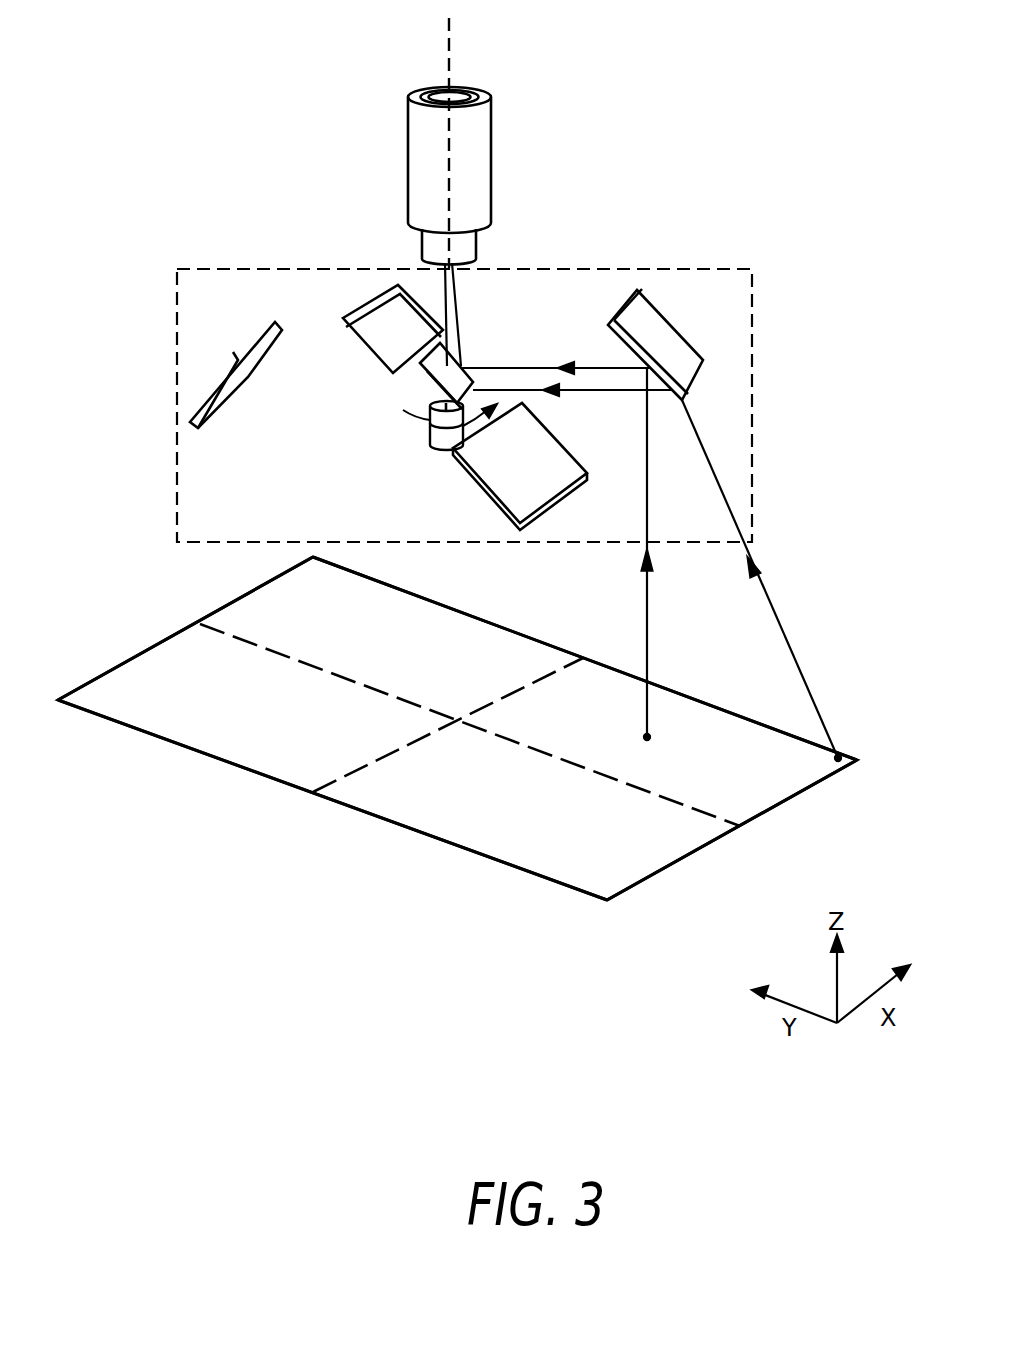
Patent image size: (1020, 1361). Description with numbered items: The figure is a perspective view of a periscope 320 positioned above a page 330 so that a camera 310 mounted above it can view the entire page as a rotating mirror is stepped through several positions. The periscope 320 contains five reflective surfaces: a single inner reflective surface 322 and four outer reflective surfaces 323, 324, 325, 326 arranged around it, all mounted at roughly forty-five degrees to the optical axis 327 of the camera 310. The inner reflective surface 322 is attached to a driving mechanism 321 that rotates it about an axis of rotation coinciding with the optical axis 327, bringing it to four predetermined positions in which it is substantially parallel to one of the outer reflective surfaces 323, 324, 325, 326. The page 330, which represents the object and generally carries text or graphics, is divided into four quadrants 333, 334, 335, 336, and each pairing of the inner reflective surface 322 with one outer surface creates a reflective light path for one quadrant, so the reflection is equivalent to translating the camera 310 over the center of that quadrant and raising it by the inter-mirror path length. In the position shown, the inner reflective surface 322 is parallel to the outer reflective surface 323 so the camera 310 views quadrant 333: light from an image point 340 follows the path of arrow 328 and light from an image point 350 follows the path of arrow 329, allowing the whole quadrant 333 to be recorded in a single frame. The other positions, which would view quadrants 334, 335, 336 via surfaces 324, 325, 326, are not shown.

The camera 310 is at (490, 157).
The periscope 320 is at (665, 268).
The driving mechanism 321 is at (430, 438).
The inner reflective surface 322 is at (462, 348).
The outer reflective surface 323 is at (643, 325).
The outer reflective surface 324 is at (512, 470).
The outer reflective surface 325 is at (248, 373).
The outer reflective surface 326 is at (380, 343).
The optical axis 327 is at (448, 62).
The arrow 328 is at (650, 612).
The arrow 329 is at (775, 610).
The page 330 is at (797, 806).
The quadrant 333 is at (695, 755).
The quadrant 334 is at (517, 828).
The quadrant 335 is at (262, 727).
The quadrant 336 is at (442, 648).
The image point 340 is at (650, 722).
The image point 350 is at (845, 752).